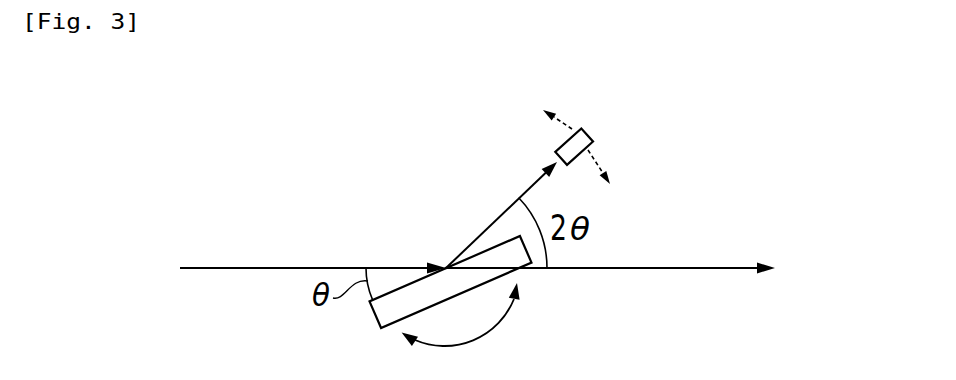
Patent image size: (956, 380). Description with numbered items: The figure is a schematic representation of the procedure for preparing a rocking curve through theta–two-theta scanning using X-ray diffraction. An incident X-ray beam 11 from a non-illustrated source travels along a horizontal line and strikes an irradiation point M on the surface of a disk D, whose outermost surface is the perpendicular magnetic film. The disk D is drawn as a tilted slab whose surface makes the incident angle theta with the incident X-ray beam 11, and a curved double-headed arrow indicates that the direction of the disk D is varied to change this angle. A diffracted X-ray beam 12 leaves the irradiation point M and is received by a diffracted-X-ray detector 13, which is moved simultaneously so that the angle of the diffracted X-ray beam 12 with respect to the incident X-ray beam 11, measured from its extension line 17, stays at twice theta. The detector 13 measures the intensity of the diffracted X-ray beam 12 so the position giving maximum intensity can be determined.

The incident X-ray beam 11 is at (242, 268).
The diffracted X-ray beam 12 is at (533, 182).
The diffracted-X-ray detector 13 is at (592, 132).
The extension line 17 is at (680, 270).
The irradiation point M is at (445, 265).
The disk D is at (375, 316).